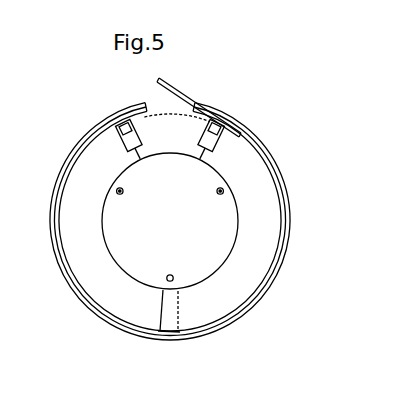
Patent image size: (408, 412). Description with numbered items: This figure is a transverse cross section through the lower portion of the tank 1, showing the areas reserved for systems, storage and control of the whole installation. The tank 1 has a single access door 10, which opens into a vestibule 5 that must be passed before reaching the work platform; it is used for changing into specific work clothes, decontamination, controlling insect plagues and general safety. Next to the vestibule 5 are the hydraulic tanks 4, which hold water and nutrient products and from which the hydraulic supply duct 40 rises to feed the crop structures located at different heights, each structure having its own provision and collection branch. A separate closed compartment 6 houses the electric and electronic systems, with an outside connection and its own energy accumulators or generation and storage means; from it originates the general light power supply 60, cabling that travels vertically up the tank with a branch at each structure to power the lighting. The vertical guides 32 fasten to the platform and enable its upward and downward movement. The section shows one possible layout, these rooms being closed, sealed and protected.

The tank 1 is at (196, 221).
The hydraulic tanks 4 is at (216, 231).
The vestibule 5 is at (206, 111).
The compartment 6 is at (209, 319).
The access door 10 is at (199, 96).
The vertical guides 32 is at (230, 234).
The hydraulic supply duct 40 is at (206, 137).
The general light power supply 60 is at (191, 351).